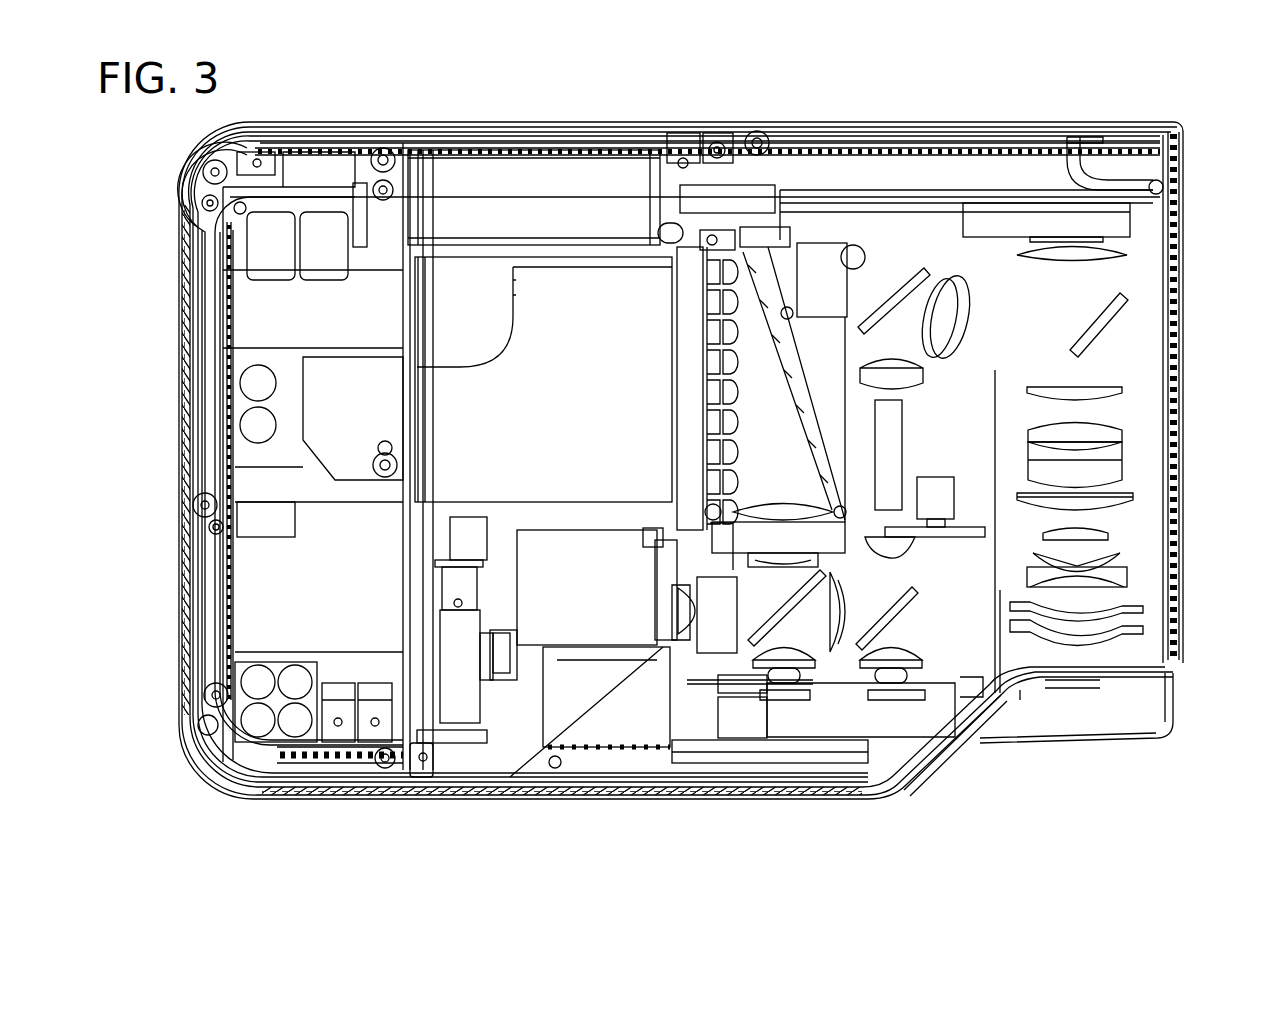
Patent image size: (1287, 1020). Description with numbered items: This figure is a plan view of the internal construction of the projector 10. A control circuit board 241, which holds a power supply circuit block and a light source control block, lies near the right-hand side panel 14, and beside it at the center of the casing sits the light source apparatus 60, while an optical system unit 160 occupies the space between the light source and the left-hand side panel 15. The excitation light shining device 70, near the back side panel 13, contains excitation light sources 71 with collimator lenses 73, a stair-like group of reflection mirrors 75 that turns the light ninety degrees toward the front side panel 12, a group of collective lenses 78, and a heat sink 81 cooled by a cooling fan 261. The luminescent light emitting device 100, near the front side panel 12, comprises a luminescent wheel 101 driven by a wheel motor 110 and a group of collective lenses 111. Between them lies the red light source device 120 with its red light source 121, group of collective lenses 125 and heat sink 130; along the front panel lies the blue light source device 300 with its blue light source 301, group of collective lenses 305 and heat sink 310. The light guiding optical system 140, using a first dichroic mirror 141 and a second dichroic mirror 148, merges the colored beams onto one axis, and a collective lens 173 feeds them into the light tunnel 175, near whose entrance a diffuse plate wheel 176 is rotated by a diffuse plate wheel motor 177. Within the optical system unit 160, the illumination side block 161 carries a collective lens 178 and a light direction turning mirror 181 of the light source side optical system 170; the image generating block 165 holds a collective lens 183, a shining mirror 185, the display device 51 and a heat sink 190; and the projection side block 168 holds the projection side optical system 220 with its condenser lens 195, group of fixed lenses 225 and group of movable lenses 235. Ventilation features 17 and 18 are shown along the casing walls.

The projector 10 is at (1192, 108).
The front side panel 12 is at (330, 792).
The back side panel 13 is at (535, 126).
The right-hand side panel 14 is at (188, 336).
The left-hand side panel 15 is at (1170, 610).
The side wall 17 is at (188, 371).
The vent 18 is at (490, 132).
The display device 51 is at (1105, 236).
The light source apparatus 60 is at (660, 430).
The excitation light shining device 70 is at (693, 245).
The excitation light sources 71 is at (718, 358).
The collimator lenses 73 is at (718, 323).
The group of reflection mirrors 75 is at (765, 383).
The group of collective lenses 78 is at (772, 508).
The heat sink 81 is at (575, 232).
The luminescent light emitting device 100 is at (752, 742).
The luminescent wheel 101 is at (697, 702).
The wheel motor 110 is at (722, 725).
The group of collective lenses 111 is at (892, 712).
The red light source device 120 is at (598, 706).
The red light source 121 is at (672, 610).
The group of collective lenses 125 is at (688, 585).
The heat sink 130 is at (560, 596).
The light guiding optical system 140 is at (987, 740).
The first dichroic mirror 141 is at (780, 618).
The second dichroic mirror 148 is at (882, 620).
The optical system unit 160 is at (1034, 656).
The illumination side block 161 is at (963, 298).
The image generating block 165 is at (1125, 276).
The projection side block 168 is at (1140, 438).
The light source side optical system 170 is at (912, 333).
The collective lens 173 is at (1040, 558).
The light tunnel 175 is at (890, 408).
The diffuse plate wheel 176 is at (893, 546).
The diffuse plate wheel motor 177 is at (945, 503).
The collective lens 178 is at (900, 360).
The light direction turning mirror 181 is at (903, 258).
The collective lens 183 is at (975, 290).
The shining mirror 185 is at (1108, 320).
The heat sink 190 is at (990, 168).
The condenser lens 195 is at (1100, 254).
The projection side optical system 220 is at (1140, 465).
The group of fixed lenses 225 is at (1099, 650).
The group of movable lenses 235 is at (1140, 408).
The control circuit board 241 is at (293, 543).
The cooling fan 261 is at (438, 180).
The blue light source device 300 is at (950, 676).
The blue light source 301 is at (945, 758).
The group of collective lenses 305 is at (912, 633).
The heat sink 310 is at (818, 676).